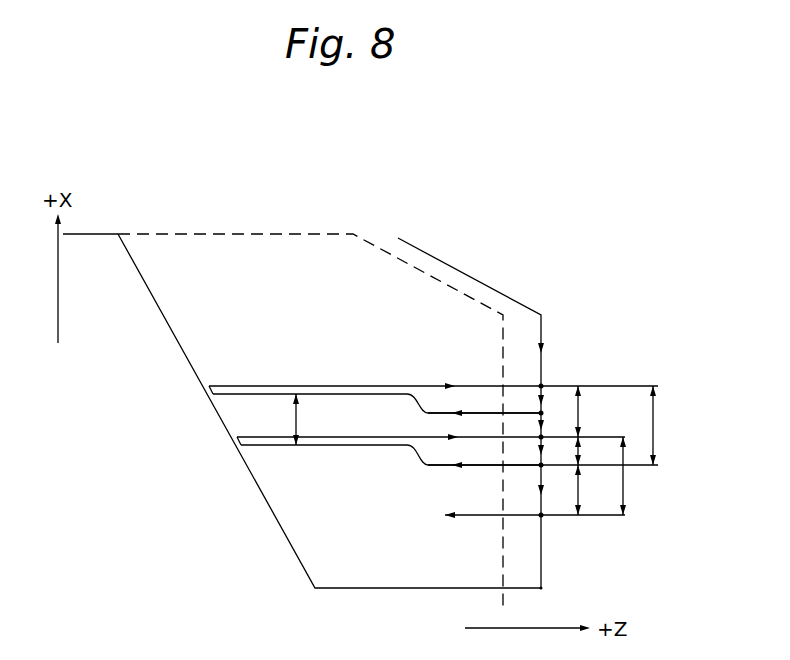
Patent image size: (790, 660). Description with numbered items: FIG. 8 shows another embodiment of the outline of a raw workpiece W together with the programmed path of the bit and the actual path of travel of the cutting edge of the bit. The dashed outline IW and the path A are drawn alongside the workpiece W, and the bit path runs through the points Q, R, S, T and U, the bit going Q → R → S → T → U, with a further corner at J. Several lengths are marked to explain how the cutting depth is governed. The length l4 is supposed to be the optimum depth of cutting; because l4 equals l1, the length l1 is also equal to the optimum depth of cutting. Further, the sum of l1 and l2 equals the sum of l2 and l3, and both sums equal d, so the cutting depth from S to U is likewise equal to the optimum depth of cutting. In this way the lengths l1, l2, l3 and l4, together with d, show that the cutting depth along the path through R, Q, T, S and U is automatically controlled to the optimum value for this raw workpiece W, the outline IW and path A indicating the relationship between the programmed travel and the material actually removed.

The workpiece W is at (218, 413).
The ideal workpiece contour (dashed path) IW is at (263, 233).
The tool approach path A is at (467, 400).
The point R is at (433, 375).
The point Q is at (494, 411).
The point T is at (431, 428).
The point S is at (543, 456).
The point U is at (535, 505).
The point J (path corner) J is at (546, 587).
The length l1 is at (589, 411).
The length l2 is at (589, 452).
The length l3 is at (589, 490).
The length l4 is at (307, 419).
The element d is at (645, 450).